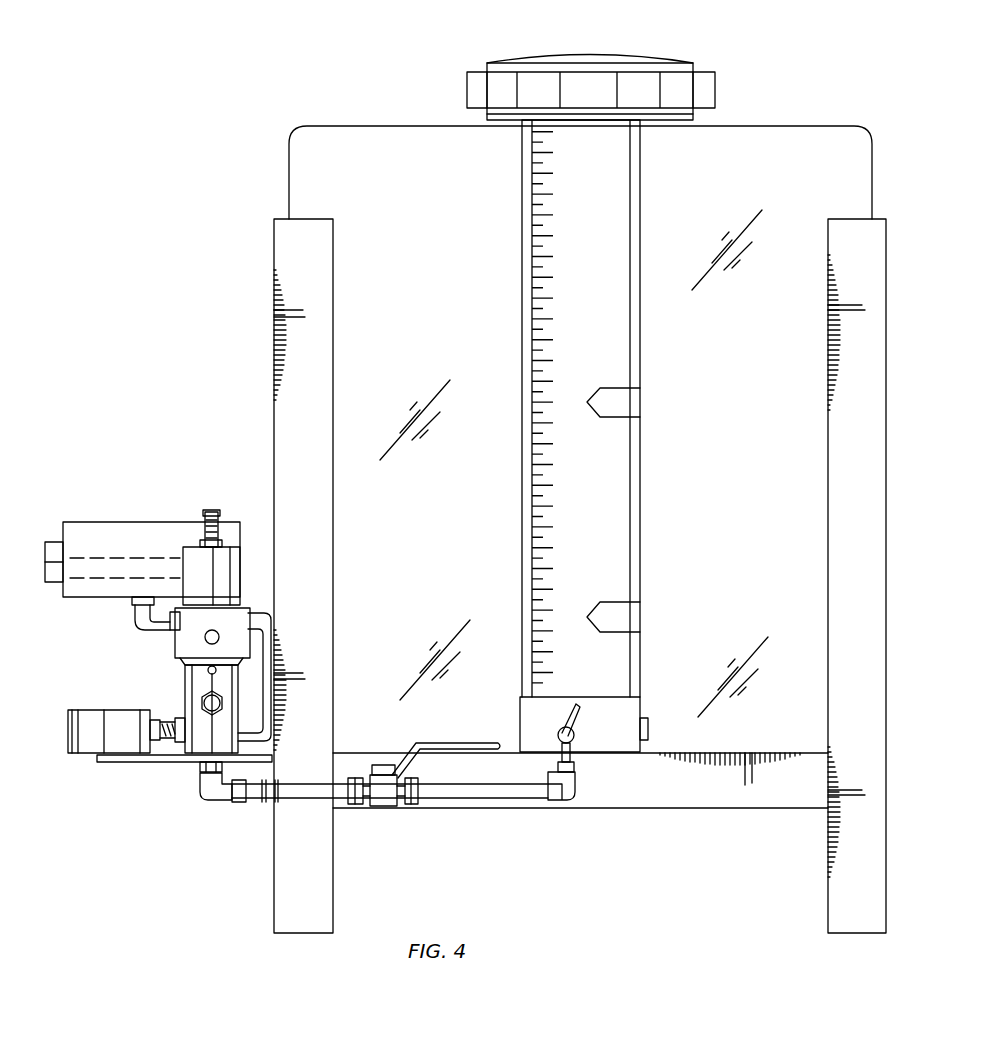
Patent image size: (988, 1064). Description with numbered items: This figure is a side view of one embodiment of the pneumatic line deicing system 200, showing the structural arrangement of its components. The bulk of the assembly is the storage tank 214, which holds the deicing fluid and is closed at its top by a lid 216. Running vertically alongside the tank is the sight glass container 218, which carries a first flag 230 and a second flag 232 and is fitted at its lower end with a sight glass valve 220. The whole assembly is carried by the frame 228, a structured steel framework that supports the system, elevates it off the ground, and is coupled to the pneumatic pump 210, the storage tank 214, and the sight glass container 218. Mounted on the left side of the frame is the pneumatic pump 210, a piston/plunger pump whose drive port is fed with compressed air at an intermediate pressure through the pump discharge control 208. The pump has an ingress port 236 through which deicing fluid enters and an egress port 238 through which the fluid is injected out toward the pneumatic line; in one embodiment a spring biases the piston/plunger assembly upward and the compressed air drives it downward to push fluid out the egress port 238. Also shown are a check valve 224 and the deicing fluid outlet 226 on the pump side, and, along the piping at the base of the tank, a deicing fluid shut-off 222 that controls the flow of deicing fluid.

The pneumatic line deicing system 200 is at (318, 49).
The pump discharge control 208 is at (145, 522).
The pneumatic pump 210 is at (177, 643).
The storage tank 214 is at (360, 126).
The lid 216 is at (585, 55).
The sight glass container 218 is at (610, 338).
The sight glass valve 220 is at (590, 722).
The deicing fluid shut-off 222 is at (447, 740).
The check valve 224 is at (236, 668).
The deicing fluid outlet 226 is at (240, 718).
The frame 228 is at (274, 305).
The first flag 230 is at (610, 401).
The second flag 232 is at (610, 618).
The ingress port 236 is at (188, 757).
The egress port 238 is at (203, 698).